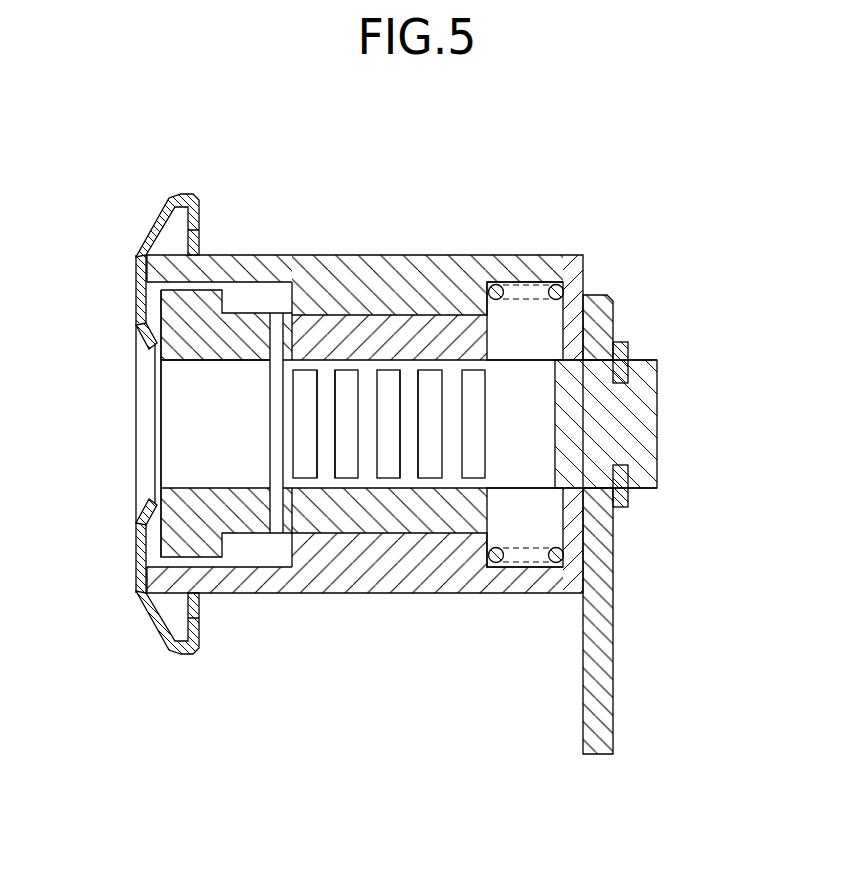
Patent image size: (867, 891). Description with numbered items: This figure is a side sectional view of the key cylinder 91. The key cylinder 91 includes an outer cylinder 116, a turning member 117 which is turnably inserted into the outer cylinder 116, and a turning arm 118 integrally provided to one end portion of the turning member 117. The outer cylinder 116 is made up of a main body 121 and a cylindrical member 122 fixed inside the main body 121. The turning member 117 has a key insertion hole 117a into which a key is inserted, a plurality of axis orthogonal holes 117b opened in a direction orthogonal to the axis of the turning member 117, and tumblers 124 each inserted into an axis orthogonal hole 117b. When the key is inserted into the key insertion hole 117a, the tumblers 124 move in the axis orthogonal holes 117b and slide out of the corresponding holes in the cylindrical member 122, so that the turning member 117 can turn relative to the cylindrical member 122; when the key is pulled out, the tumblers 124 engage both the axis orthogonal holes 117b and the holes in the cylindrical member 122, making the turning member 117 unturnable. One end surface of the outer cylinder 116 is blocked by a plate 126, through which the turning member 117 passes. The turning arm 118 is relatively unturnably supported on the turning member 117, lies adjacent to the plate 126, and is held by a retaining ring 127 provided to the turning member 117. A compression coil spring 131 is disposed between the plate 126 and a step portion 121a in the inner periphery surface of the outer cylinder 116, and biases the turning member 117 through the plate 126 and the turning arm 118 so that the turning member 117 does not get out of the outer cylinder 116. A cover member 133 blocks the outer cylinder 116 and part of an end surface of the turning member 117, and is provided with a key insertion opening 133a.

The key cylinder 91 is at (170, 139).
The outer cylinder 116 is at (338, 256).
The turning member 117 is at (237, 506).
The key insertion hole 117a is at (191, 364).
The axis orthogonal holes 117b is at (475, 437).
The turning arm 118 is at (600, 683).
The main body 121 is at (403, 255).
The step portion 121a is at (514, 290).
The cylindrical member 122 is at (438, 330).
The tumblers 124 is at (478, 442).
The plate 126 is at (582, 278).
The retaining ring 127 is at (621, 340).
The compression coil spring 131 is at (556, 284).
The cover member 133 is at (150, 626).
The key insertion opening 133a is at (151, 491).